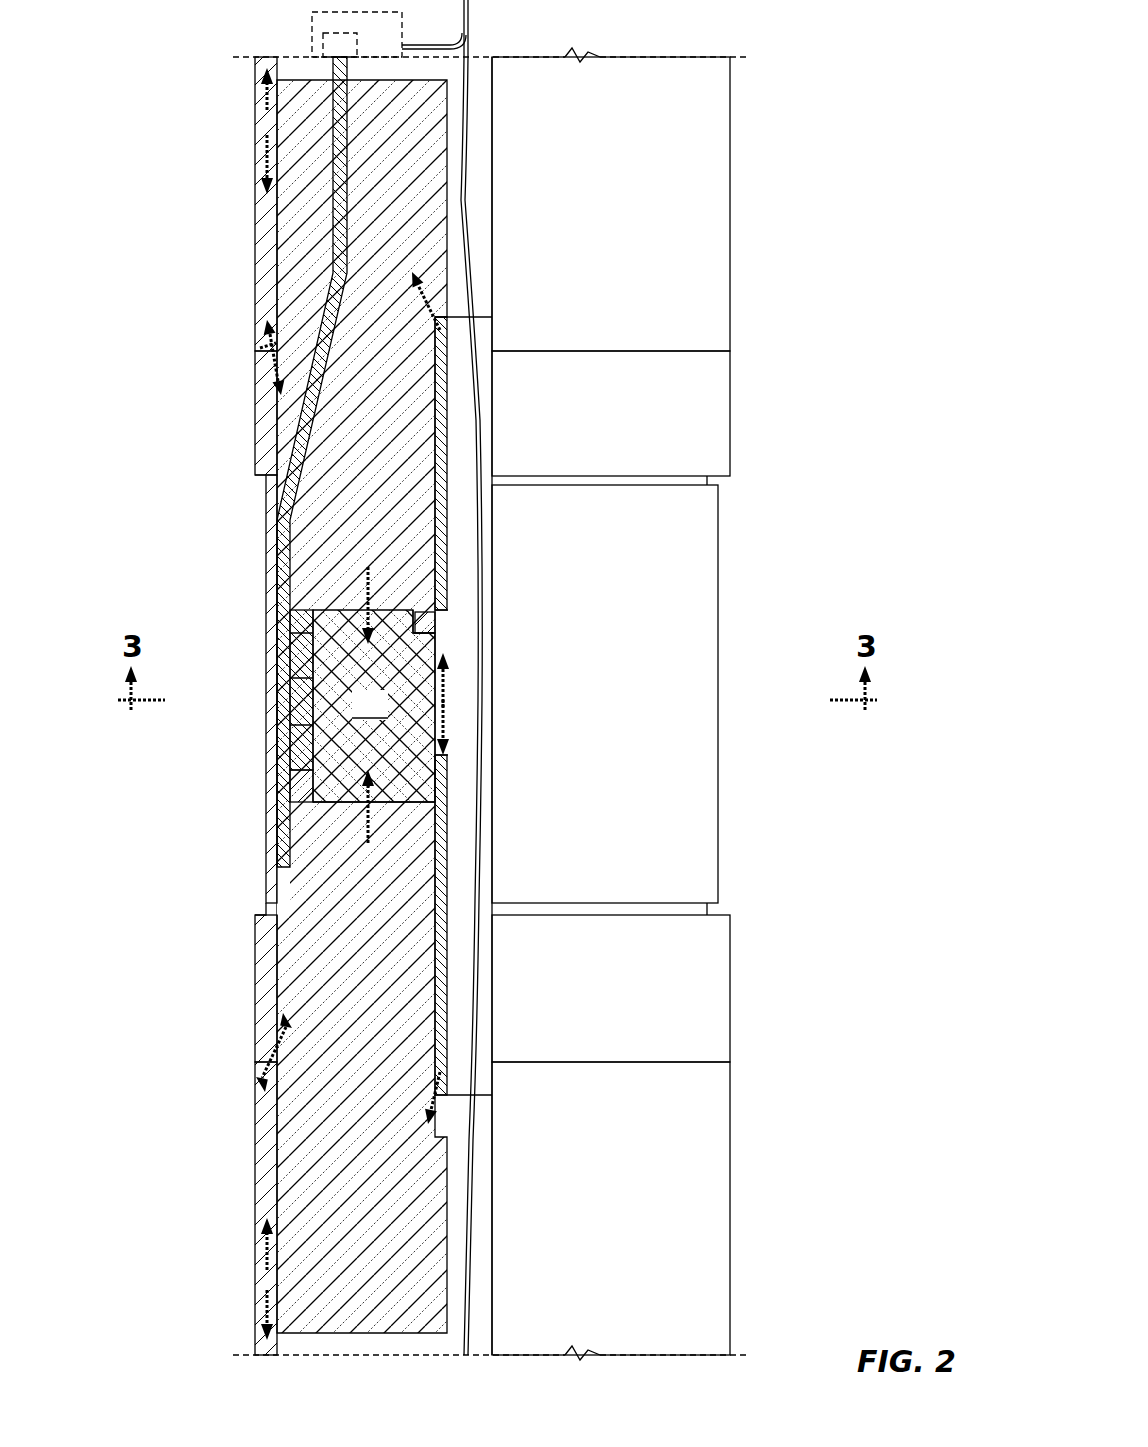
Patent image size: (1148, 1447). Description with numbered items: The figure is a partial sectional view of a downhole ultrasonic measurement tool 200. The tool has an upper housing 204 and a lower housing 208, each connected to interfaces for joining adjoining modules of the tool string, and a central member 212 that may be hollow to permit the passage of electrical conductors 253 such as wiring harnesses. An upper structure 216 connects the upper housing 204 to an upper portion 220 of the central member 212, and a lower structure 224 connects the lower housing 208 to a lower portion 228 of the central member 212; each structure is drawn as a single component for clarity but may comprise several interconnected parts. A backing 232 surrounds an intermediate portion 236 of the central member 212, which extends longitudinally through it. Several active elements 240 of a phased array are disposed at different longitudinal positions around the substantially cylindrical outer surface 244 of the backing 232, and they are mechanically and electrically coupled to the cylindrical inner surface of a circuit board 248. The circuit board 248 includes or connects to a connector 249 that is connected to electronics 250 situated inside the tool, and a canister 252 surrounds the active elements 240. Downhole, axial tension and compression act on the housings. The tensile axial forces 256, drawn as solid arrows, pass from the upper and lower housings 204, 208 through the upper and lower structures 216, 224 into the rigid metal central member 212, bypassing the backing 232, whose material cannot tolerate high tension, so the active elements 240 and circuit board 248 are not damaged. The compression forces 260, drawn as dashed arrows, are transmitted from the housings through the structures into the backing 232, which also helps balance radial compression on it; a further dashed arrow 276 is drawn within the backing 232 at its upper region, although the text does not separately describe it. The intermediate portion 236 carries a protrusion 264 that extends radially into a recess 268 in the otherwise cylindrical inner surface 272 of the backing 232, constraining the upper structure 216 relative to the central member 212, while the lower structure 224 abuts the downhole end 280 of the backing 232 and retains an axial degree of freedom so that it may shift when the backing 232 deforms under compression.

The downhole ultrasonic measurement tool 200 is at (124, 80).
The upper housing 204 is at (255, 272).
The lower housing 208 is at (255, 1148).
The central member 212 is at (447, 530).
The upper structure 216 is at (255, 420).
The upper portion 220 is at (468, 402).
The lower structure 224 is at (255, 956).
The lower portion 228 is at (468, 1000).
The backing 232 is at (374, 706).
The intermediate portion 236 is at (466, 713).
The active elements 240 is at (300, 638).
The outer surface 244 is at (300, 783).
The circuit board 248 is at (285, 495).
The connector 249 is at (318, 48).
The electronics 250 is at (404, 44).
The canister 252 is at (266, 600).
The electrical conductors 253 is at (466, 230).
The tensile axial forces 256 is at (265, 103).
The compression forces 260 is at (265, 162).
The protrusion 264 is at (412, 630).
The recess 268 is at (426, 640).
The inner surface 272 is at (440, 790).
The downward force arrow 276 is at (402, 608).
The downhole end 280 is at (413, 804).